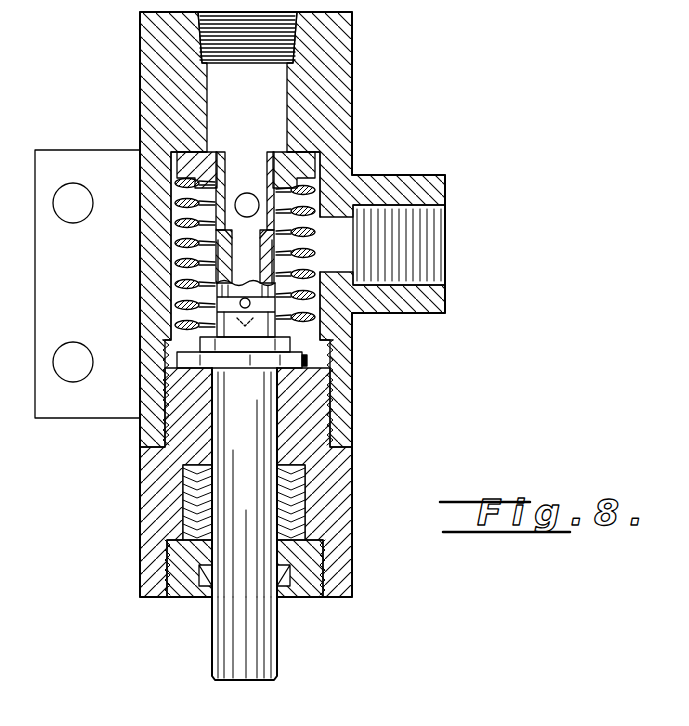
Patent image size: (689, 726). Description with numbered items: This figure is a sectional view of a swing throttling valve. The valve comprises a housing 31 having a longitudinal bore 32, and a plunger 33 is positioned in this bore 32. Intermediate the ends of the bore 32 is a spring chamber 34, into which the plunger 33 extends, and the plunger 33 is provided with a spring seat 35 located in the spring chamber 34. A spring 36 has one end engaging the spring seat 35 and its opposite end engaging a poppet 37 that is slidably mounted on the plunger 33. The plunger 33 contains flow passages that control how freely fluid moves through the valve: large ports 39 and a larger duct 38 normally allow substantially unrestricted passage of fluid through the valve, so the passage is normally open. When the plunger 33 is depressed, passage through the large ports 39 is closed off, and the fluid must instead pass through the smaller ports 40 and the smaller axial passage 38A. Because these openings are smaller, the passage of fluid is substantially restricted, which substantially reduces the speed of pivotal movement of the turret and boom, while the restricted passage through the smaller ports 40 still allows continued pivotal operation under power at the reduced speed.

The housing 31 is at (148, 38).
The longitudinal bore 32 is at (270, 424).
The plunger 33 is at (262, 618).
The spring chamber 34 is at (292, 303).
The spring seat 35 is at (308, 360).
The spring 36 is at (303, 208).
The poppet 37 is at (300, 162).
The larger duct 38 is at (244, 160).
The smaller axial passage 38A is at (237, 252).
The large ports 39 is at (250, 193).
The smaller ports 40 is at (300, 342).